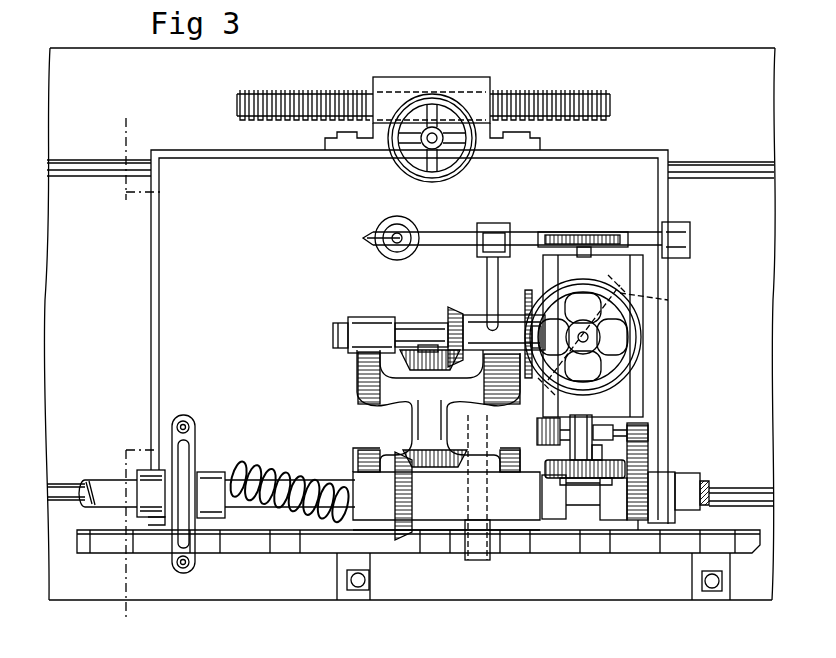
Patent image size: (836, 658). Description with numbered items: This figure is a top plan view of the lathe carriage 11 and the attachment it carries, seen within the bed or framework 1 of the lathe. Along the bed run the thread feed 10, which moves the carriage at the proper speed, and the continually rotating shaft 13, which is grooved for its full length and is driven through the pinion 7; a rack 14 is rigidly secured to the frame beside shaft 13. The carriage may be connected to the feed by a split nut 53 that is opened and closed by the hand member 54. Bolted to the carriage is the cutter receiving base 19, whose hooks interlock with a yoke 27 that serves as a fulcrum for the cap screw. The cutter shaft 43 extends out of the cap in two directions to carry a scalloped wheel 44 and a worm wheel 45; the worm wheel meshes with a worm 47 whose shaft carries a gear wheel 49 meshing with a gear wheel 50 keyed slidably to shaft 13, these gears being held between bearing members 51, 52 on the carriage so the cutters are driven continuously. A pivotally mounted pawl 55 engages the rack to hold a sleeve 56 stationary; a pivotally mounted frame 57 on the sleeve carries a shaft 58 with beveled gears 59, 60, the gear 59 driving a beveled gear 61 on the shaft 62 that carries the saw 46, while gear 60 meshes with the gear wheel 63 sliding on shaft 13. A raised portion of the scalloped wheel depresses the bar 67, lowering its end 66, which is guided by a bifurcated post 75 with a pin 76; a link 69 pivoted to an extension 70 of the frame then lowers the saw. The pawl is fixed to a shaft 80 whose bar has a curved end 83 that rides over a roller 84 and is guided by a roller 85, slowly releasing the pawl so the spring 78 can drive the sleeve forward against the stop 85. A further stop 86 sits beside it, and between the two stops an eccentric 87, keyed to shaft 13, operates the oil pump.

The bed or framework 1 is at (409, 324).
The pinion 7 is at (140, 368).
The thread feed 10 is at (284, 100).
The carriage 11 is at (668, 388).
The shaft 13 is at (300, 474).
The rack 14 is at (428, 545).
The cutter receiving base 19 is at (571, 497).
The yoke 27 is at (610, 336).
The shaft 43 is at (584, 232).
The scalloped wheel 44 is at (596, 236).
The worm wheel 45 is at (624, 468).
The saw 46 is at (529, 290).
The worm 47 is at (652, 448).
The gear wheel 49 is at (652, 430).
The gear wheel 50 is at (638, 522).
The bearing member 51 is at (661, 497).
The bearing member 52 is at (613, 499).
The split nut 53 is at (398, 82).
The hand member 54 is at (452, 108).
The pawl 55 is at (508, 545).
The sleeve 56 is at (446, 485).
The pivotally mounted frame 57 is at (380, 412).
The shaft 58 is at (435, 345).
The beveled gear 59 is at (420, 348).
The beveled gear 60 is at (430, 450).
The beveled gear 61 is at (458, 308).
The shaft 62 is at (412, 335).
The gear wheel 63 is at (400, 476).
The end of bar 66 is at (371, 246).
The bar 67 is at (524, 238).
The link 69 is at (494, 232).
The extension 70 is at (490, 282).
The bifurcated post 75 is at (408, 235).
The pin 76 is at (409, 213).
The spring 78 is at (268, 452).
The shaft 80 is at (475, 548).
The curved end 83 is at (612, 430).
The roller 84 is at (548, 430).
The roller / combined journal and stop 85 is at (214, 472).
The stop 86 is at (106, 497).
The eccentric 87 is at (188, 462).